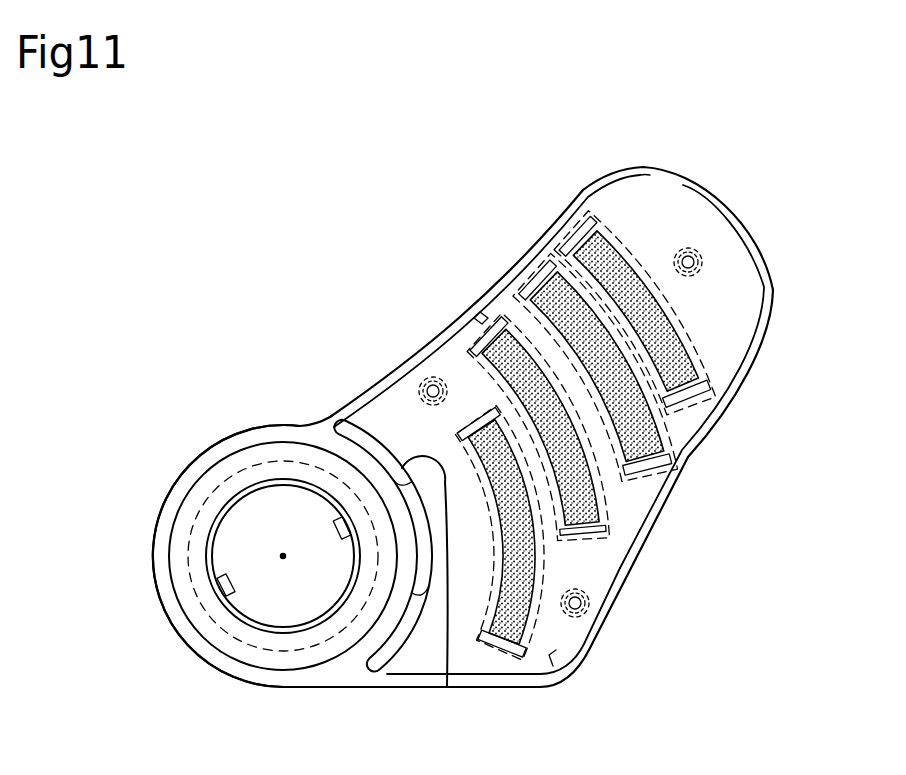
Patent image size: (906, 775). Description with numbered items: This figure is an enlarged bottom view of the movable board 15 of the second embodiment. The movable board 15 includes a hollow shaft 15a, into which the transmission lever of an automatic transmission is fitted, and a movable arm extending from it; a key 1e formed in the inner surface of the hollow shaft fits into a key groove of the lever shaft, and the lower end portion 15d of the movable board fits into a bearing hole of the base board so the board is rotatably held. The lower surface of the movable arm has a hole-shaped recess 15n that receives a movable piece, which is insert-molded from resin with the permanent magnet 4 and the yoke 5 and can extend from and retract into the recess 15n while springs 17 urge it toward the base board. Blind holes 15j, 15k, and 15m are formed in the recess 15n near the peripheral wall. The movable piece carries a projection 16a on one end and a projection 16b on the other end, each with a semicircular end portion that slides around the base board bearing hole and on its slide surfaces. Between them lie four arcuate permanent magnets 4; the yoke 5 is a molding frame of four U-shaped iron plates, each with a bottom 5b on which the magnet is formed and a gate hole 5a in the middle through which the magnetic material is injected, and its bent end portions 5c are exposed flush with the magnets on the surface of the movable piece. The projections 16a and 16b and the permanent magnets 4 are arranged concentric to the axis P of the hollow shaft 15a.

The movable board 15 is at (220, 437).
The hollow shaft 15a is at (250, 676).
The lower end portion 15d is at (325, 678).
The blind hole 15j is at (702, 254).
The blind hole 15k is at (615, 638).
The blind hole 15m is at (372, 430).
The recess 15n is at (660, 202).
The projection 16a is at (420, 684).
The projection 16b is at (750, 243).
The spring 17 is at (705, 265).
The key 1e is at (333, 527).
The permanent magnet 4 is at (560, 338).
The yoke 5 is at (572, 468).
The gate hole 5a is at (630, 310).
The bottom 5b is at (610, 228).
The bent end portion 5c is at (472, 345).
The axis P is at (283, 560).